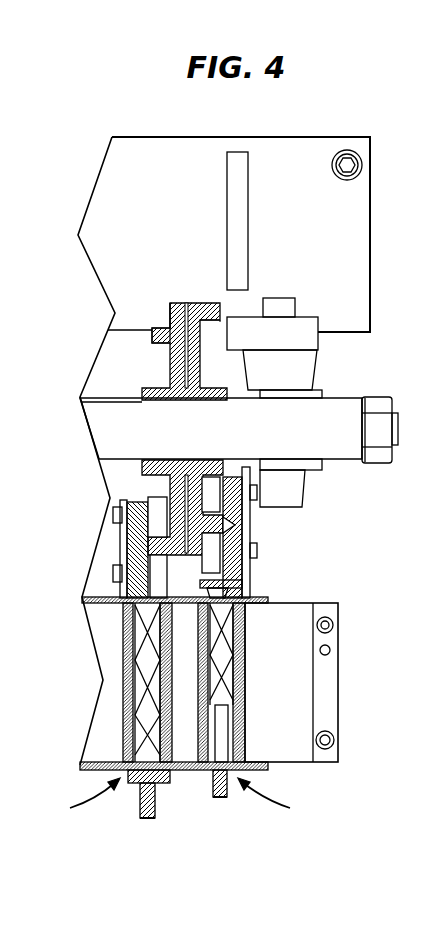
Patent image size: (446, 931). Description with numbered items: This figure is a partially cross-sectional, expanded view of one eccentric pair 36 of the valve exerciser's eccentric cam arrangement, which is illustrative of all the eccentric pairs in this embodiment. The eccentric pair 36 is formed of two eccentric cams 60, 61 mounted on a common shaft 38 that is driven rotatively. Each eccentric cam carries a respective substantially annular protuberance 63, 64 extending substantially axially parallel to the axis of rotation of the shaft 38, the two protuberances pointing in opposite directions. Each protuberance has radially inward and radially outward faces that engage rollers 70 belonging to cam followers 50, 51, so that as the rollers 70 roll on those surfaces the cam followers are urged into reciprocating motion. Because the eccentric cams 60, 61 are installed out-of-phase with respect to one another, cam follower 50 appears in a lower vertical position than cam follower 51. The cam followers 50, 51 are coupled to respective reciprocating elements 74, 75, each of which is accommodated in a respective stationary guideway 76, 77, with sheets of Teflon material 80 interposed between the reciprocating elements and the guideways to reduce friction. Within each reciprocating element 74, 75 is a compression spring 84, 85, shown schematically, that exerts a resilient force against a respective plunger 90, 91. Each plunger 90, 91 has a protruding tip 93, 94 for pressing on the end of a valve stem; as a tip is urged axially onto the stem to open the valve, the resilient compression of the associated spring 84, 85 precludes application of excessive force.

The eccentric pair 36 is at (172, 302).
The eccentric cam 61 is at (205, 303).
The eccentric cam 60 is at (170, 310).
The substantially annular protuberance 63 is at (154, 344).
The substantially annular protuberance 64 is at (205, 322).
The common shaft 38 is at (337, 407).
The rollers 70 is at (158, 500).
The cam follower 50 is at (125, 598).
The cam follower 51 is at (243, 582).
The reciprocating element 74 is at (123, 622).
The reciprocating element 75 is at (245, 620).
The compression spring 84 is at (150, 665).
The compression spring 85 is at (222, 645).
The sheets of Teflon material 80 is at (127, 750).
The stationary guideway 76 is at (81, 800).
The stationary guideway 77 is at (278, 800).
The plunger 90 is at (153, 790).
The plunger 91 is at (215, 790).
The tip 93 is at (145, 819).
The tip 94 is at (219, 798).